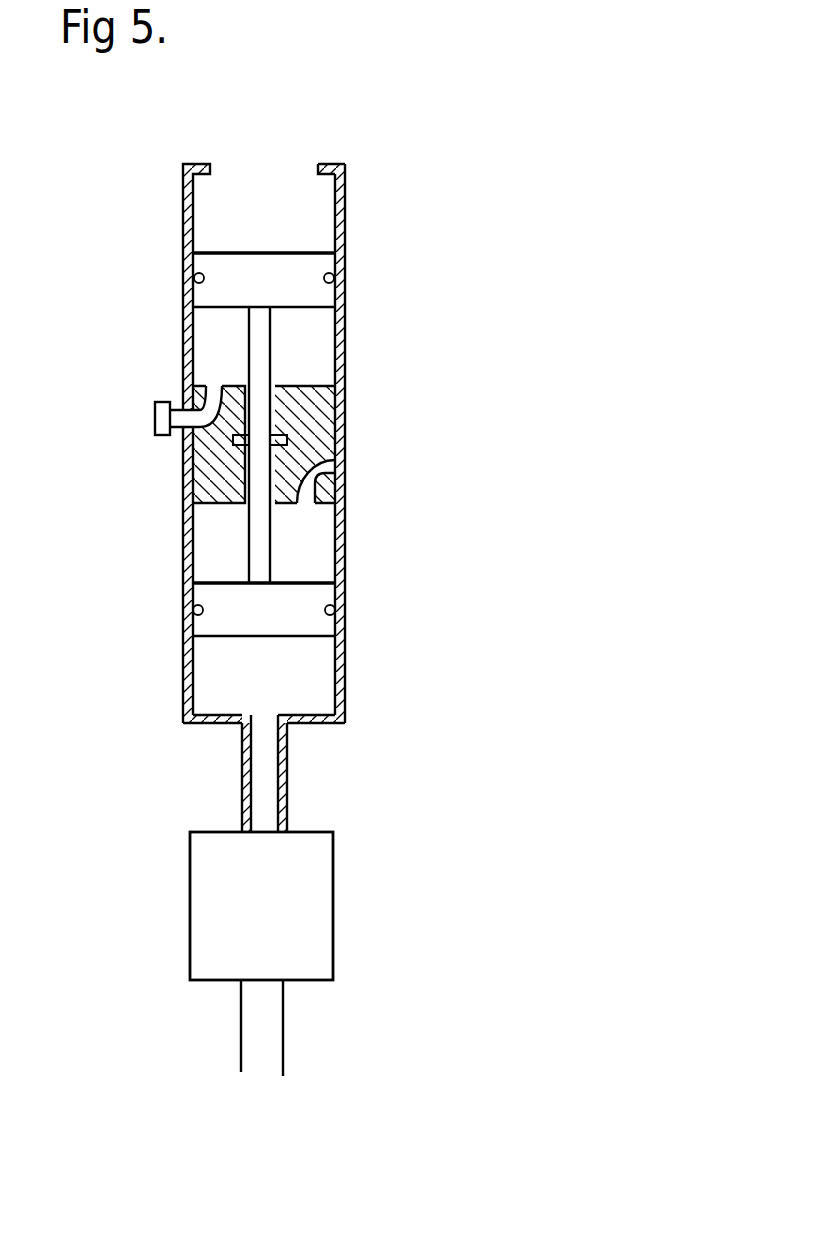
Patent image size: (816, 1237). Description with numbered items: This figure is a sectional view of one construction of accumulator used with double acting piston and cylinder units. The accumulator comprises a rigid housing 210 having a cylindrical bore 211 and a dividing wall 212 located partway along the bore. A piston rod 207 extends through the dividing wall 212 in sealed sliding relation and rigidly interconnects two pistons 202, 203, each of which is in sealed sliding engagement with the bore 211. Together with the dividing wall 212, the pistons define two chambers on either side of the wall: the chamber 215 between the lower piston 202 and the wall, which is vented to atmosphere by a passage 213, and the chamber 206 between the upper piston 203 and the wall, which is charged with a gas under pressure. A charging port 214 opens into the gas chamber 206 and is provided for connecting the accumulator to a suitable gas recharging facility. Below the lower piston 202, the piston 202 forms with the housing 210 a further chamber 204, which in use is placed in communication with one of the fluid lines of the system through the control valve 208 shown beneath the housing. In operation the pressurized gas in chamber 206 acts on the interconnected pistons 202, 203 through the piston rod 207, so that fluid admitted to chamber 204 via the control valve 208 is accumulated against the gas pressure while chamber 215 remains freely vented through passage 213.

The piston 202 is at (313, 603).
The piston 203 is at (213, 269).
The chamber 204 is at (212, 663).
The chamber 206 is at (317, 338).
The piston rod 207 is at (258, 532).
The control valve 208 is at (288, 912).
The rigid housing 210 is at (343, 697).
The cylindrical bore 211 is at (305, 213).
The dividing wall 212 is at (325, 413).
The passage 213 is at (325, 468).
The charging port 214 is at (155, 417).
The chamber 215 is at (315, 555).